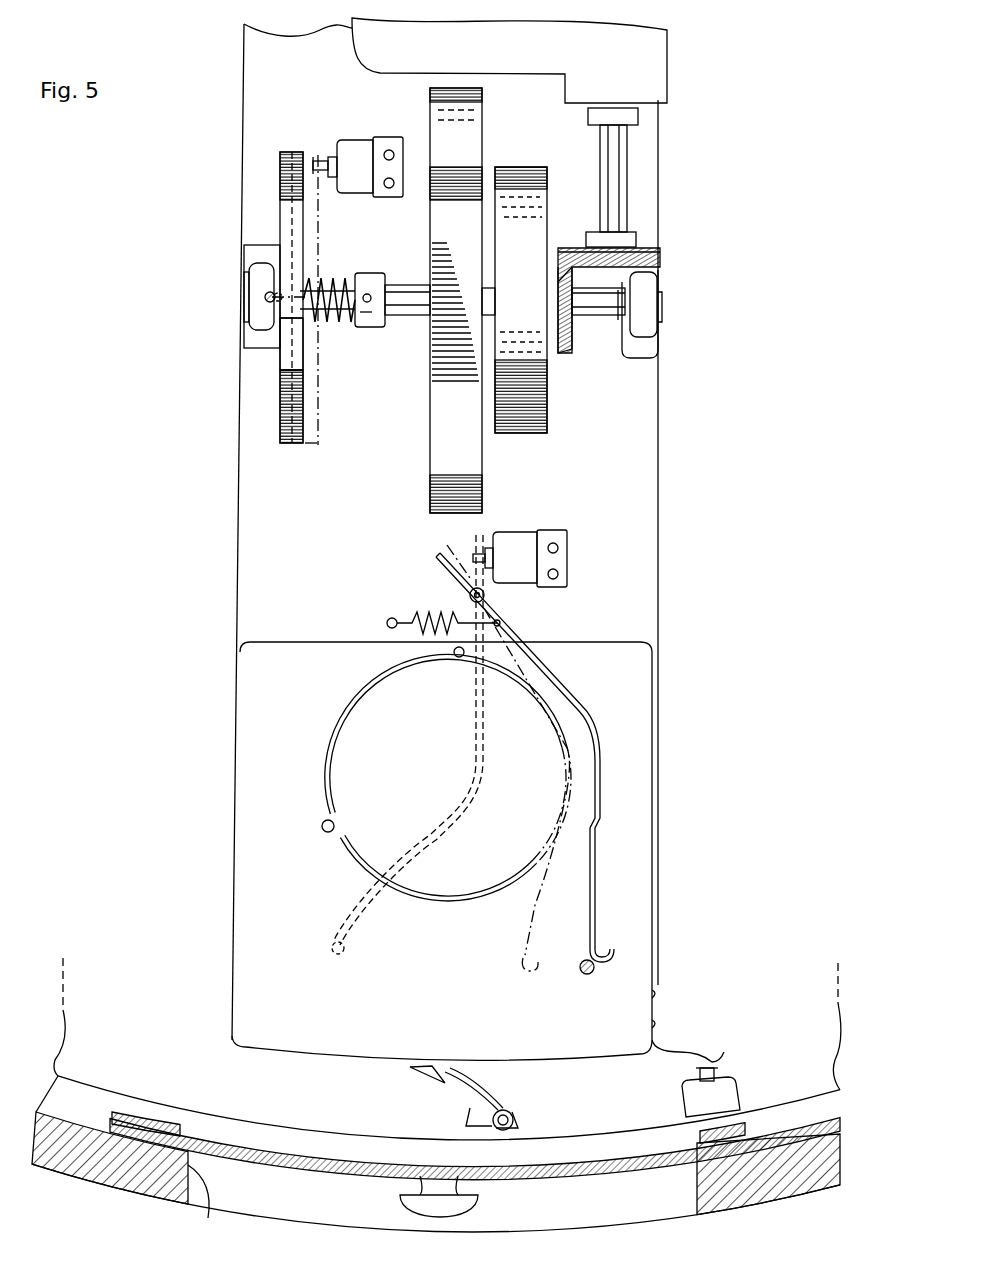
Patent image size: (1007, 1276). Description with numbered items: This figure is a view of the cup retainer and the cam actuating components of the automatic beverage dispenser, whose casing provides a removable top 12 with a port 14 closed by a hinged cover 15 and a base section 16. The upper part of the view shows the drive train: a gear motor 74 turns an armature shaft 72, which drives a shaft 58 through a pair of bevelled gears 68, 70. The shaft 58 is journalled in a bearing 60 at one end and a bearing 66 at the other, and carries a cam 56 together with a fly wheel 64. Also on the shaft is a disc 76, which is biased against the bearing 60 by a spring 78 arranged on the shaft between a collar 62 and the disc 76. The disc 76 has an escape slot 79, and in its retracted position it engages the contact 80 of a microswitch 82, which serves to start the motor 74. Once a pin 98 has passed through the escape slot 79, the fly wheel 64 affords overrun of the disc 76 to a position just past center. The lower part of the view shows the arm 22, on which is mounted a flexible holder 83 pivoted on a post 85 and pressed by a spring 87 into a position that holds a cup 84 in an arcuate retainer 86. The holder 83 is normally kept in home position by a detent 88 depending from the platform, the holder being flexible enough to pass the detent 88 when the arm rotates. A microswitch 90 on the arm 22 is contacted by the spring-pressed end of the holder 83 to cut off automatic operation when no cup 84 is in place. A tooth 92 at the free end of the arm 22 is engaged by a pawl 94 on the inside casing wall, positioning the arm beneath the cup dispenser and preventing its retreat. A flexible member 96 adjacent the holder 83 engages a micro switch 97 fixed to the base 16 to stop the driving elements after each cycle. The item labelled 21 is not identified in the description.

The removable top 12 is at (98, 1160).
The port 14 is at (210, 1205).
The hinged cover 15 is at (350, 1172).
The base section 16 is at (72, 1098).
The platform 21 is at (72, 1008).
The arm 22 is at (250, 542).
The cam 56 is at (463, 155).
The shaft 58 is at (410, 307).
The bearing 60 is at (257, 268).
The collar 62 is at (372, 280).
The fly wheel 64 is at (518, 185).
The bearing 66 is at (645, 335).
The bevelled gear 68 is at (563, 355).
The bevelled gear 70 is at (648, 262).
The armature shaft 72 is at (613, 183).
The gear motor 74 is at (650, 44).
The disc 76 is at (285, 178).
The spring 78 is at (318, 283).
The escape slot 79 is at (292, 330).
The contact 80 is at (314, 160).
The microswitch 82 is at (358, 147).
The flexible holder 83 is at (592, 724).
The cup 84 is at (478, 900).
The post 85 is at (486, 596).
The arcuate retainer 86 is at (346, 708).
The spring 87 is at (420, 616).
The detent 88 is at (586, 975).
The microswitch 90 is at (510, 542).
The tooth 92 is at (428, 1070).
The pawl 94 is at (455, 1100).
The flexible member 96 is at (668, 1060).
The micro switch 97 is at (732, 1094).
The pin 98 is at (263, 297).